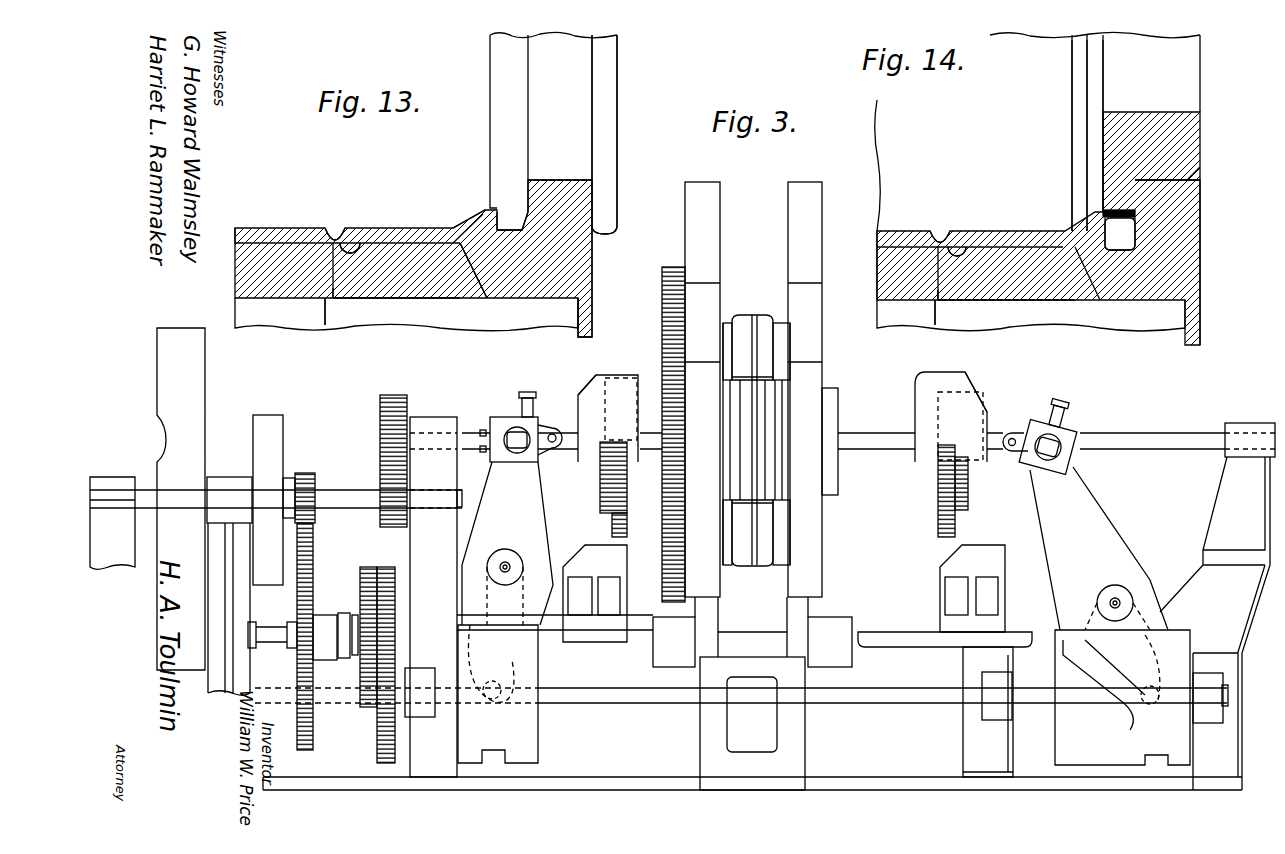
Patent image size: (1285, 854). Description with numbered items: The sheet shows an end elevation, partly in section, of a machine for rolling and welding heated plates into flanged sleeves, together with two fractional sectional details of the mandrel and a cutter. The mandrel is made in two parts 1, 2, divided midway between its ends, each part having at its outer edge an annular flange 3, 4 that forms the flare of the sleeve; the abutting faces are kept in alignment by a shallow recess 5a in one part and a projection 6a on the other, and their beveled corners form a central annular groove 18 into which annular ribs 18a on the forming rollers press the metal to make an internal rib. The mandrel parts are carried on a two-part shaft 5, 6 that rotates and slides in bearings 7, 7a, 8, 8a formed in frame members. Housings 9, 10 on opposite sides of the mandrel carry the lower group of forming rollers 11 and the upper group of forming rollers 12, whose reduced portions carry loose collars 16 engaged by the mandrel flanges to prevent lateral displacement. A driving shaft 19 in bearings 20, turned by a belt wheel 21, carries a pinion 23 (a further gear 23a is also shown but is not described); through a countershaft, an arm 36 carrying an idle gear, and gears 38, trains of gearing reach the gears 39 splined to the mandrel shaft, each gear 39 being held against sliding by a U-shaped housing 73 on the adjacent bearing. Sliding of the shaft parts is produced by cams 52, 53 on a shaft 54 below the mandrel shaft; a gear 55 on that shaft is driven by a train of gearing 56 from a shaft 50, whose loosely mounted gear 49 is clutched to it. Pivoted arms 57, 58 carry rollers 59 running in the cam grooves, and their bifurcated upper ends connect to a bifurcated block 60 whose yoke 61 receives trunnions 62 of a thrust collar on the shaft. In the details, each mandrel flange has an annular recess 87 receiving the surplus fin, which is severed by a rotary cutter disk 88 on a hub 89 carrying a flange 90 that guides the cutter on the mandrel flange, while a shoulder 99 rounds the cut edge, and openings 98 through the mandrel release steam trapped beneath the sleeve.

In FIG. 13, the mandrel part 1 is at (432, 256).
In FIG. 14, the mandrel part 1 is at (1053, 292).
In FIG. 3, the mandrel part 1 is at (767, 410).
In FIG. 13, the mandrel part 2 is at (284, 250).
In FIG. 14, the mandrel part 2 is at (904, 256).
In FIG. 3, the mandrel part 2 is at (740, 408).
In FIG. 14, the annular flange 3 is at (1195, 222).
In FIG. 3, the annular flange 3 is at (776, 419).
In FIG. 13, the annular flange 4 is at (594, 222).
In FIG. 3, the annular flange 4 is at (730, 429).
In FIG. 3, the mandrel shaft part 5 is at (877, 432).
In FIG. 13, the shallow recess 5a is at (330, 290).
In FIG. 14, the shallow recess 5a is at (928, 292).
In FIG. 3, the mandrel shaft part 6 is at (470, 433).
In FIG. 13, the projection 6a is at (338, 292).
In FIG. 14, the projection 6a is at (938, 294).
In FIG. 3, the bearing 7 is at (1247, 430).
In FIG. 3, the bearing 7a is at (978, 410).
In FIG. 3, the bearing 8 is at (437, 418).
In FIG. 3, the bearing 8a is at (592, 374).
In FIG. 3, the housing 9 is at (812, 538).
In FIG. 3, the housing 10 is at (706, 581).
In FIG. 3, the forming roller 11 is at (768, 566).
In FIG. 14, the forming roller 12 is at (1055, 125).
In FIG. 3, the forming roller 12 is at (742, 322).
In FIG. 3, the collar 16 is at (728, 352).
In FIG. 13, the annular groove 18 is at (365, 246).
In FIG. 14, the annular groove 18 is at (975, 248).
In FIG. 3, the annular groove 18 is at (760, 334).
In FIG. 13, the annular rib 18a is at (333, 232).
In FIG. 14, the annular rib 18a is at (942, 230).
In FIG. 3, the driving shaft 19 is at (355, 495).
In FIG. 3, the bearing 20 is at (112, 490).
In FIG. 3, the belt wheel 21 is at (283, 432).
In FIG. 3, the pinion 23 is at (397, 528).
In FIG. 3, the gear 23a is at (316, 478).
In FIG. 3, the arm 36 is at (590, 522).
In FIG. 3, the gear 38 is at (606, 532).
In FIG. 3, the gear 39 is at (622, 486).
In FIG. 3, the gear 49 is at (314, 567).
In FIG. 3, the shaft 50 is at (281, 645).
In FIG. 3, the cam 52 is at (1100, 768).
In FIG. 3, the cam 53 is at (535, 756).
In FIG. 3, the cam shaft 54 is at (882, 700).
In FIG. 3, the gear 55 is at (396, 748).
In FIG. 3, the train of gearing 56 is at (361, 681).
In FIG. 3, the pivoted arm 57 is at (1110, 527).
In FIG. 3, the pivoted arm 58 is at (538, 523).
In FIG. 3, the roller 59 is at (505, 672).
In FIG. 3, the bifurcated block 60 is at (515, 417).
In FIG. 3, the yoke 61 is at (555, 428).
In FIG. 3, the trunnion 62 is at (533, 462).
In FIG. 3, the housing 73 is at (620, 374).
In FIG. 13, the annular recess 87 is at (528, 236).
In FIG. 14, the annular recess 87 is at (1120, 233).
In FIG. 13, the cutter disk 88 is at (513, 215).
In FIG. 13, the hub 89 is at (578, 164).
In FIG. 13, the flange 90 is at (606, 212).
In FIG. 13, the opening 98 is at (493, 290).
In FIG. 13, the shoulder 99 is at (490, 211).